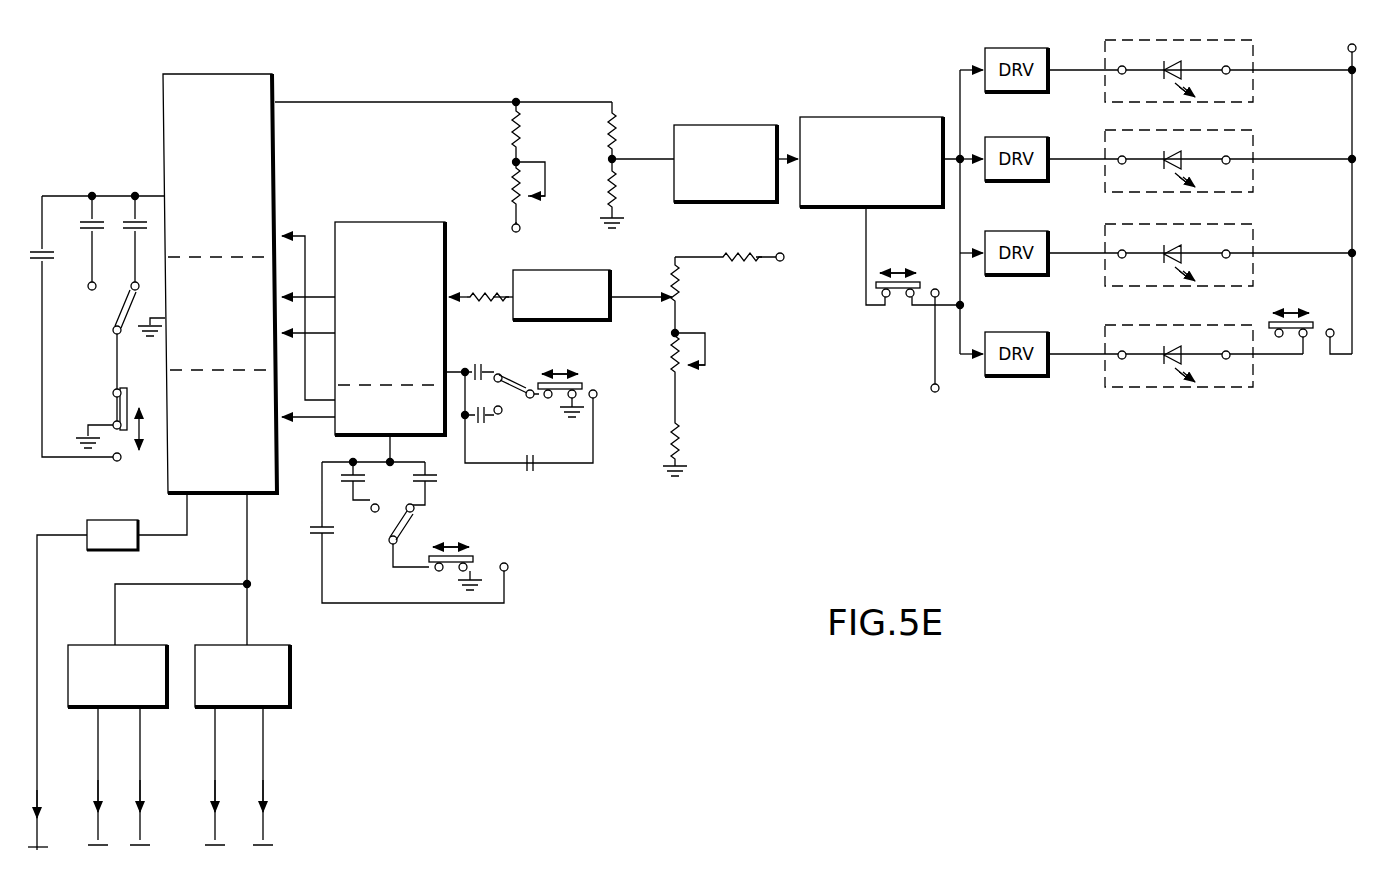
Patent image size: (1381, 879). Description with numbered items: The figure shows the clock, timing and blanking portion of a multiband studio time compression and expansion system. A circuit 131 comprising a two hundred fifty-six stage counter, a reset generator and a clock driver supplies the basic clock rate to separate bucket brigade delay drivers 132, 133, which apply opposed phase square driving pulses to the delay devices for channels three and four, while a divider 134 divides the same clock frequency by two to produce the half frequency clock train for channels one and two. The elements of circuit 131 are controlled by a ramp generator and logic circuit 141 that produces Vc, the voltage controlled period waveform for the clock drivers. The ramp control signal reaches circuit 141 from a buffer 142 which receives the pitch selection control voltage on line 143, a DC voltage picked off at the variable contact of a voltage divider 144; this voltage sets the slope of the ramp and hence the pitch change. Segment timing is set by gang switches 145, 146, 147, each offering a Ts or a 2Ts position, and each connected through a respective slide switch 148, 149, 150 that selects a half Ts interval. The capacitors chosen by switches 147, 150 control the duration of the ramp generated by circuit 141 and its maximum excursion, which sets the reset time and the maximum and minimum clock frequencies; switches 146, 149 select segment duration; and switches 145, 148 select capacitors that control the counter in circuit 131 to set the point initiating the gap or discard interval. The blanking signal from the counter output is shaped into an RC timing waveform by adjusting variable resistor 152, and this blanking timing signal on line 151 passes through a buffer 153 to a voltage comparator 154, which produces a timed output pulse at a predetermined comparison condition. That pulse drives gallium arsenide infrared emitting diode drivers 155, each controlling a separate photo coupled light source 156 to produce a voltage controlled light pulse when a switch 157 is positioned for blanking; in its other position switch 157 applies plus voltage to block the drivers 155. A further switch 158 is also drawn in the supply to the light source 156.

The clock driver circuit 131 is at (267, 495).
The bucket brigade delay driver 132 is at (92, 645).
The bucket brigade delay driver 133 is at (290, 668).
The divider 134 is at (97, 521).
The ramp generator and logic circuit 141 is at (368, 222).
The buffer 142 is at (569, 270).
The pitch selection control input line 143 is at (631, 296).
The voltage divider potentiometer 144 is at (685, 317).
The gang switch 145 is at (113, 318).
The gang switch 146 is at (390, 527).
The gang switch 147 is at (519, 373).
The slide switch 148 is at (118, 406).
The slide switch 149 is at (452, 567).
The slide switch 150 is at (567, 379).
The blanking timing signal line 151 is at (322, 102).
The variable resistor 152 is at (524, 197).
The buffer 153 is at (715, 125).
The voltage comparator 154 is at (846, 117).
The infrared emitting diode driver 155 is at (1004, 333).
The photo coupled light source 156 is at (1167, 331).
The blanking switch 157 is at (867, 288).
The switch 158 is at (1275, 324).